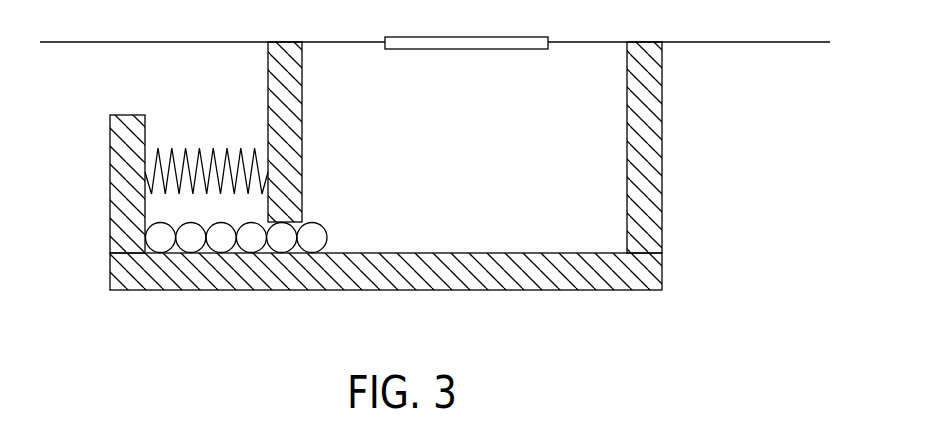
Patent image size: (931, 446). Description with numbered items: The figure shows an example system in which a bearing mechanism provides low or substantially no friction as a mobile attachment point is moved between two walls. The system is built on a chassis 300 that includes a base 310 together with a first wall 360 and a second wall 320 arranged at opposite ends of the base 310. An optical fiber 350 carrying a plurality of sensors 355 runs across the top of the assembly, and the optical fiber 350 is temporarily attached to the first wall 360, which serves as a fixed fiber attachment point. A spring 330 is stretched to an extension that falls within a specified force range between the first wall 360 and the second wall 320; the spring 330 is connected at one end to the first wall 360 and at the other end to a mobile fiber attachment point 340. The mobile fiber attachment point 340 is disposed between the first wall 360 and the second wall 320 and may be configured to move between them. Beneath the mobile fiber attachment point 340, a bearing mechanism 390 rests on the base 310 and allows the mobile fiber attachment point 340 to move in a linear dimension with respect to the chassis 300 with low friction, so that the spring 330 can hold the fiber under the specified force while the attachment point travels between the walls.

The chassis 300 is at (704, 147).
The base 310 is at (228, 280).
The second wall 320 is at (650, 201).
The spring 330 is at (172, 146).
The mobile fiber attachment point 340 is at (291, 144).
The optical fiber 350 is at (337, 43).
The sensors 355 is at (467, 49).
The first wall 360 is at (117, 192).
The bearing mechanism 390 is at (313, 238).